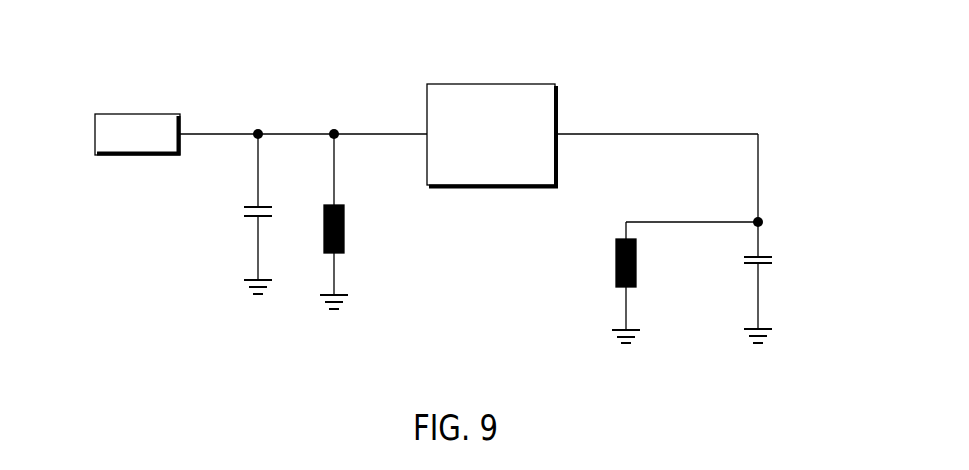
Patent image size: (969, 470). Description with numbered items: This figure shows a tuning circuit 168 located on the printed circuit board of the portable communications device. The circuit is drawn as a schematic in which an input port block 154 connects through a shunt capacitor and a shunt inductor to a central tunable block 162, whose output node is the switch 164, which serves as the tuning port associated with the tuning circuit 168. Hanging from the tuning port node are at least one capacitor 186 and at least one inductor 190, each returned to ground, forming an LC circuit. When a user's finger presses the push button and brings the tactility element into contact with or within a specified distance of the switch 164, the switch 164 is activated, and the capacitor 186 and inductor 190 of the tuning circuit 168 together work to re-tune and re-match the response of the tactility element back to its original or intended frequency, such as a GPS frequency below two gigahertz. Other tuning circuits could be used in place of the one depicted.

The tuning circuit 168 is at (125, 47).
The antenna port 154 is at (95, 133).
The tunable matching block 162 is at (427, 158).
The switch 164 is at (768, 131).
The capacitor 186 is at (767, 256).
The inductor 190 is at (617, 262).